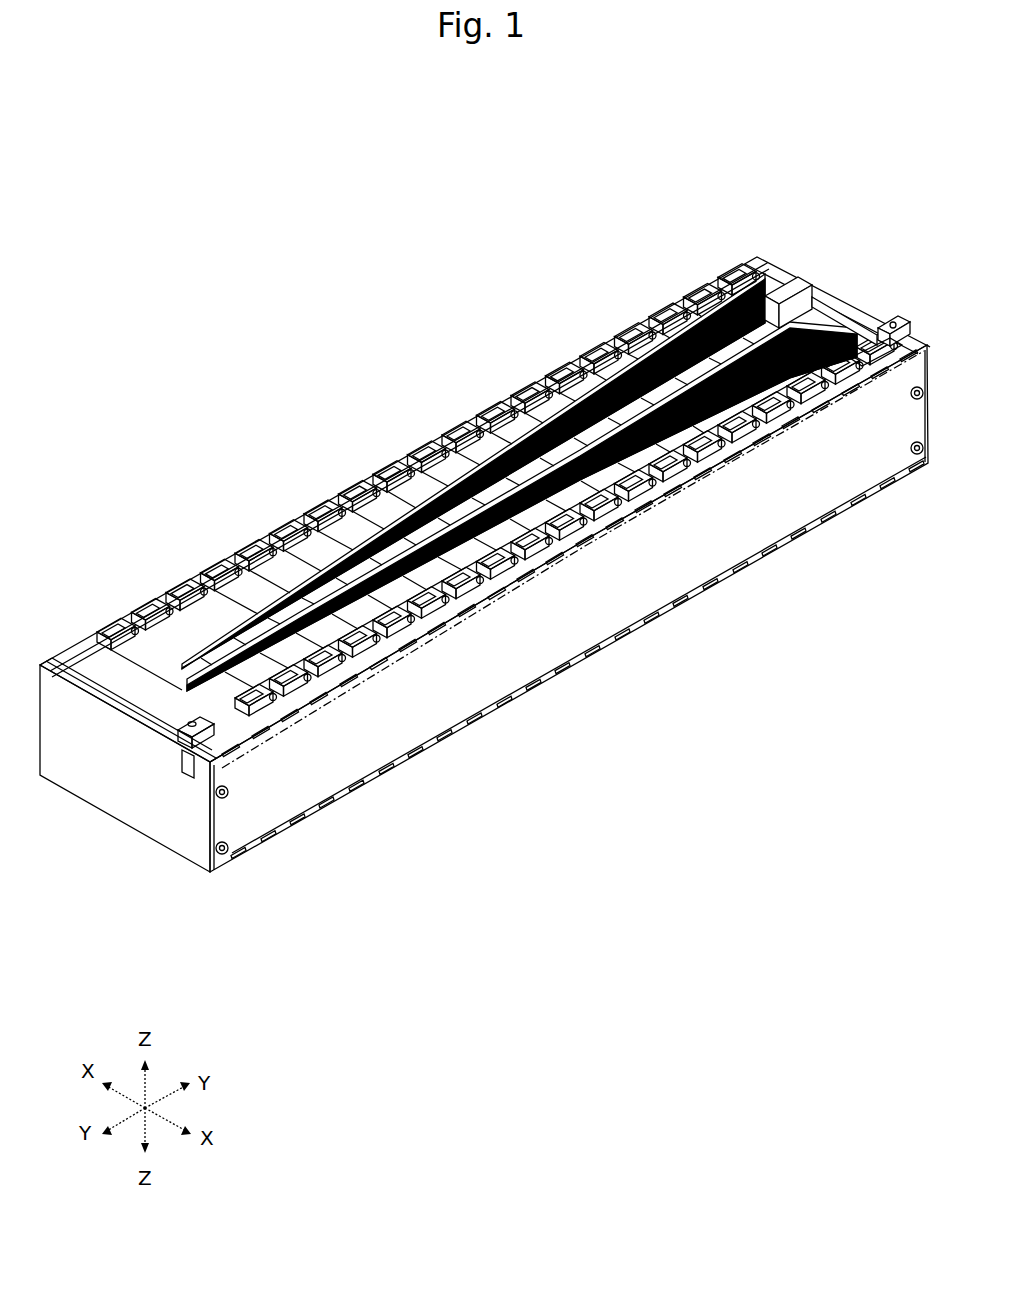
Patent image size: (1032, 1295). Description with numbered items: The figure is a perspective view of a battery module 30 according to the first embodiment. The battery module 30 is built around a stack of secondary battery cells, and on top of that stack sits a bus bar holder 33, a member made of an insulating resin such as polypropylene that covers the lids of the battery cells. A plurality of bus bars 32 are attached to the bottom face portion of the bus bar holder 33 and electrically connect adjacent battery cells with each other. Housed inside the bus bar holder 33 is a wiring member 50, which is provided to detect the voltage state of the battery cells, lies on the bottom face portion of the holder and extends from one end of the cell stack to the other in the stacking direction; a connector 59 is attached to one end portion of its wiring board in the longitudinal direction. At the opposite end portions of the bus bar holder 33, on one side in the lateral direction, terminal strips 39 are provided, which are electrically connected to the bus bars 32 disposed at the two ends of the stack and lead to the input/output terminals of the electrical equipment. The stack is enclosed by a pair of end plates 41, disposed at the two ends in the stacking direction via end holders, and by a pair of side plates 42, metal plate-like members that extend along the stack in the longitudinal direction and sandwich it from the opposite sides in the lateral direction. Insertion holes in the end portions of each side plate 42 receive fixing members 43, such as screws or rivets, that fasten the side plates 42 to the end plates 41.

The battery module 30 is at (372, 366).
The bus bars 32 is at (290, 545).
The bus bar holder 33 is at (76, 664).
The terminal strips 39 is at (196, 725).
The end plates 41 is at (133, 790).
The side plates 42 is at (612, 620).
The fixing members 43 is at (229, 793).
The wiring member 50 is at (775, 290).
The connector 59 is at (810, 298).